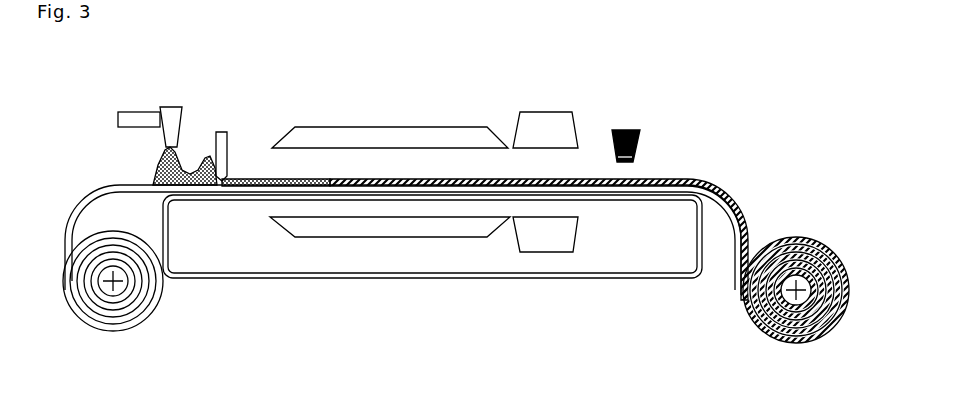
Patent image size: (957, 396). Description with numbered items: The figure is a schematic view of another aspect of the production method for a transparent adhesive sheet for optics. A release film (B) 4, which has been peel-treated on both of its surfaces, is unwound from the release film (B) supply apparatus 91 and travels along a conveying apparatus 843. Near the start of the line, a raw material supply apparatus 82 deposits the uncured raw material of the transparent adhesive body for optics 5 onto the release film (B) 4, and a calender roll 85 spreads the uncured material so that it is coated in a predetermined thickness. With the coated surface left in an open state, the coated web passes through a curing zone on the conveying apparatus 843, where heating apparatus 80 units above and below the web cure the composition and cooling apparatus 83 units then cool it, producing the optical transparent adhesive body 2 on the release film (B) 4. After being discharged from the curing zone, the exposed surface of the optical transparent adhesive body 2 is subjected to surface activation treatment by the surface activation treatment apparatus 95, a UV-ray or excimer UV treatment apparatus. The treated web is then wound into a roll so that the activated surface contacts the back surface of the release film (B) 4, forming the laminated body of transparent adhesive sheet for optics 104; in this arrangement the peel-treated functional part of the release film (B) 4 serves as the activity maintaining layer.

The optical transparent adhesive body 2 is at (655, 178).
The release film (B) 4 is at (83, 206).
The uncured raw material of transparent adhesive body for optics 5 is at (158, 168).
The heating apparatus (heater) 80 is at (373, 122).
The raw material supply apparatus 82 is at (118, 113).
The cooling apparatus 83 is at (547, 110).
The calender roll 85 is at (228, 140).
The release film (B) supply apparatus (roll) 91 is at (152, 308).
The surface activation treatment apparatus (UV-ray treatment apparatus/excimer UV tr 95 is at (627, 127).
The laminated body of transparent adhesive sheet for optics 104 is at (793, 238).
The conveying apparatus (conveyor) 843 is at (290, 278).